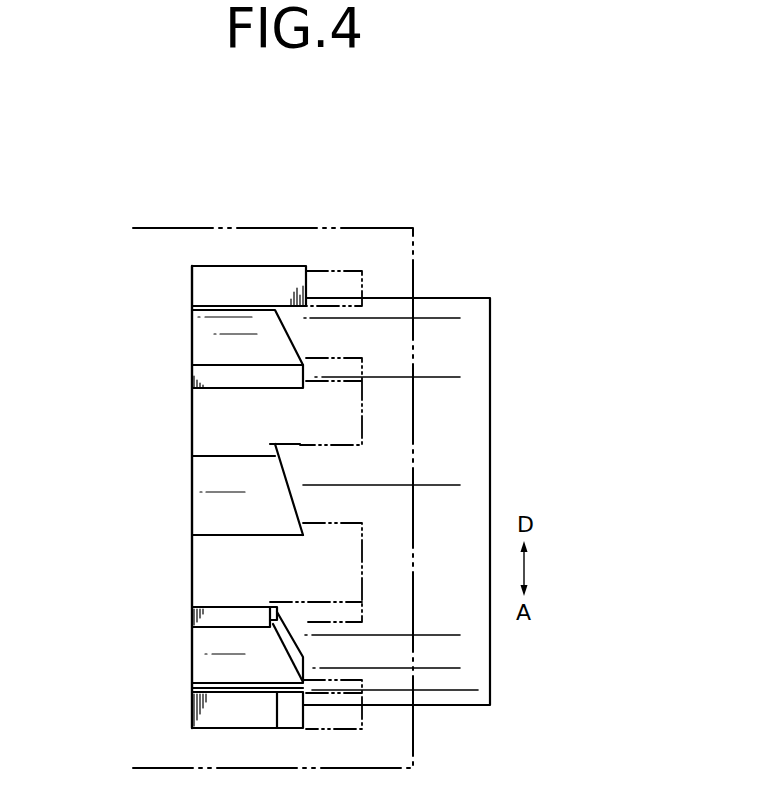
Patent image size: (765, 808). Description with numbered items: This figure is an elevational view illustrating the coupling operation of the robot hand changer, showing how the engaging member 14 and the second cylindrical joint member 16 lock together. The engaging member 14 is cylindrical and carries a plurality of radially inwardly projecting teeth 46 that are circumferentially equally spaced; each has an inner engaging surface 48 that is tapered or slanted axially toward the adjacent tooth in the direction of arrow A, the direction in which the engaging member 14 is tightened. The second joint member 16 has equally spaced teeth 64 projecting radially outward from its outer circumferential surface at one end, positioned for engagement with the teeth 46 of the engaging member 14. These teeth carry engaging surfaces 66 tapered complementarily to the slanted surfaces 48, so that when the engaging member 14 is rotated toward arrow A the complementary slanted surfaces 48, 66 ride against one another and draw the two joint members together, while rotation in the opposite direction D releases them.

The engaging member 14 is at (265, 243).
The second cylindrical joint member 16 is at (471, 296).
The teeth 46 is at (338, 456).
The inner engaging surfaces 48 is at (270, 447).
The teeth 64 is at (248, 506).
The engaging surfaces 66 is at (303, 507).